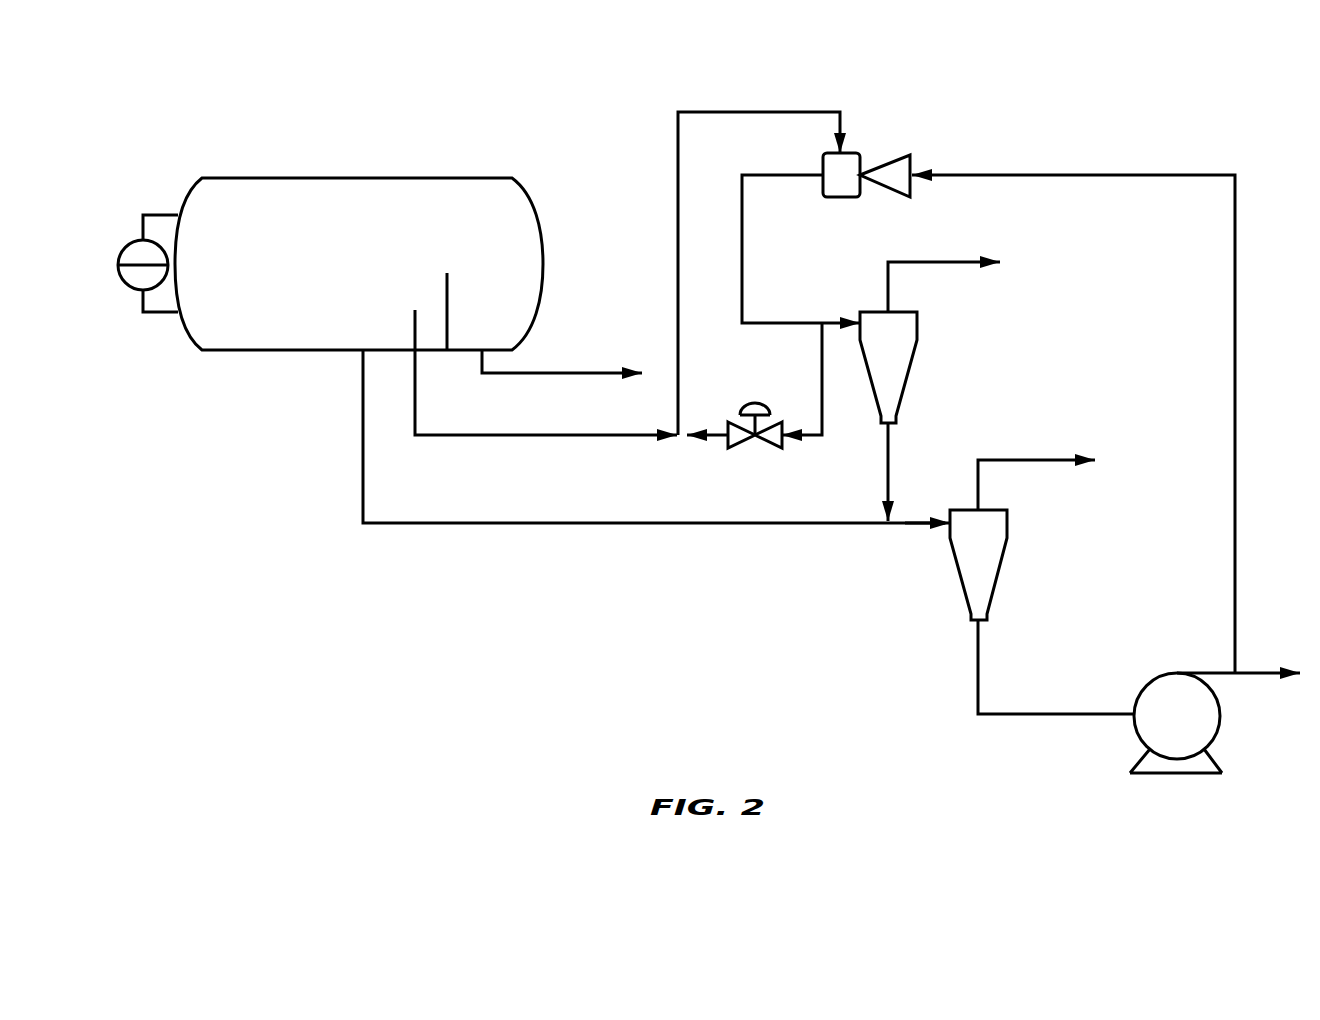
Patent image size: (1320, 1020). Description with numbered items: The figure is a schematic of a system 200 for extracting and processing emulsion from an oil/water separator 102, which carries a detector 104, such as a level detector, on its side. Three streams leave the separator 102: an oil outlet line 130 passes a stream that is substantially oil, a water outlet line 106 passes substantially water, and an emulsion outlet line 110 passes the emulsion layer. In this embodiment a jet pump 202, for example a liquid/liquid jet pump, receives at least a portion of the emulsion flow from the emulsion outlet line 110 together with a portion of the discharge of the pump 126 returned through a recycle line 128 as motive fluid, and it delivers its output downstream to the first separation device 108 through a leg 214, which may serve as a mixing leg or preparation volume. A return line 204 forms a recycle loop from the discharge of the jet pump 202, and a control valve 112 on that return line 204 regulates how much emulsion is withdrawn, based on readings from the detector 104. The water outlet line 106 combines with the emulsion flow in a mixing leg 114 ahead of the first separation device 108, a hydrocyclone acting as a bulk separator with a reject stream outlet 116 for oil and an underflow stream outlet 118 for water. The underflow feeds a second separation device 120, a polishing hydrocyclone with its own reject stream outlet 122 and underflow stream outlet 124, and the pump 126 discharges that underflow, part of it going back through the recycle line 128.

The system 200 is at (150, 72).
The oil/water separator 102 is at (536, 200).
The detector 104 is at (132, 246).
The oil outlet line 130 is at (548, 373).
The emulsion outlet line 110 is at (508, 435).
The water outlet line 106 is at (458, 523).
The jet pump 202 is at (897, 158).
The leg 214 is at (742, 255).
The return line 204 is at (822, 368).
The control valve 112 is at (760, 448).
The first separation device 108 is at (911, 375).
The reject stream outlet 116 is at (940, 260).
The underflow stream outlet 118 is at (888, 466).
The mixing leg 114 is at (907, 526).
The second separation device 120 is at (997, 572).
The reject stream outlet 122 is at (1042, 458).
The underflow stream outlet 124 is at (1018, 714).
The pump 126 is at (1150, 683).
The recycle line 128 is at (1235, 360).